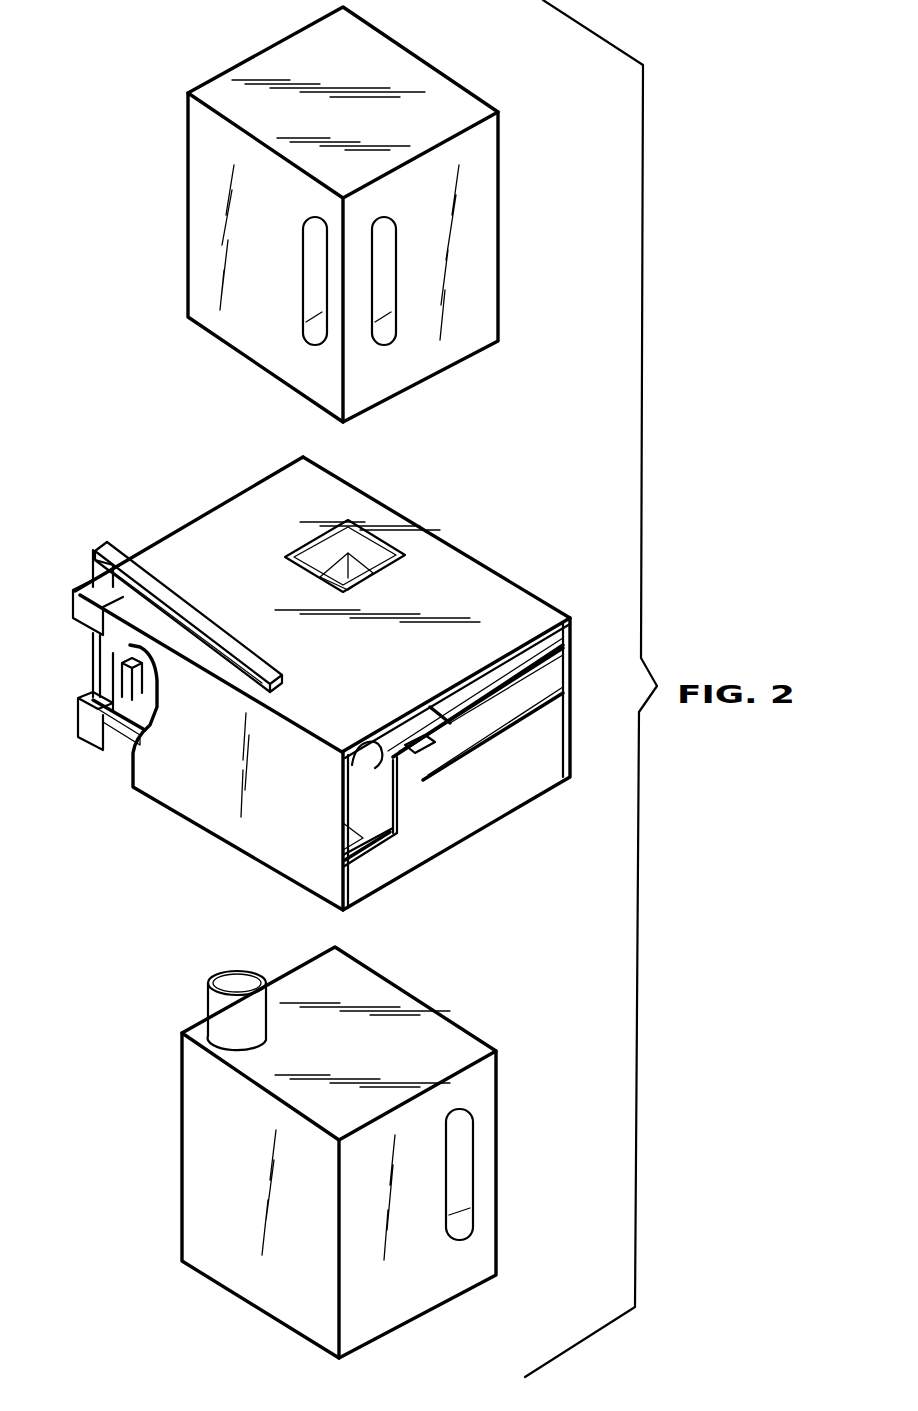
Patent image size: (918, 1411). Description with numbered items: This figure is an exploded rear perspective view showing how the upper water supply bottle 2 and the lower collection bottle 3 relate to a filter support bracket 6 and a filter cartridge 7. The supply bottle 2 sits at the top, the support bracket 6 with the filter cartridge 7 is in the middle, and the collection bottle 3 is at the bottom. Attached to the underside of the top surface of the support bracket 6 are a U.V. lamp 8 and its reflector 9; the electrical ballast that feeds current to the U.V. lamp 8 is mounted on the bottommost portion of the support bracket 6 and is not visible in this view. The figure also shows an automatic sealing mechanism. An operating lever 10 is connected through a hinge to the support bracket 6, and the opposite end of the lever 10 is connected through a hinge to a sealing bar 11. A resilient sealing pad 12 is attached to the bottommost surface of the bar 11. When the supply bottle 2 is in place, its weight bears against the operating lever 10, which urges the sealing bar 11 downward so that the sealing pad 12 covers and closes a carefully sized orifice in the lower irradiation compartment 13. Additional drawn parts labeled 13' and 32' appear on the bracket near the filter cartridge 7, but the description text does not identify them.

The supply bottle 2 is at (262, 52).
The collection bottle 3 is at (183, 1163).
The filter support bracket 6 is at (190, 798).
The filter cartridge 7 is at (485, 795).
The U.V. lamp 8 is at (410, 755).
The reflector 9 is at (360, 753).
The operating lever 10 is at (112, 545).
The sealing bar 11 is at (92, 568).
The resilient sealing pad 12 is at (78, 718).
The lower irradiation compartment 13 is at (95, 739).
The plate 13' is at (404, 873).
The rail 32' is at (481, 713).